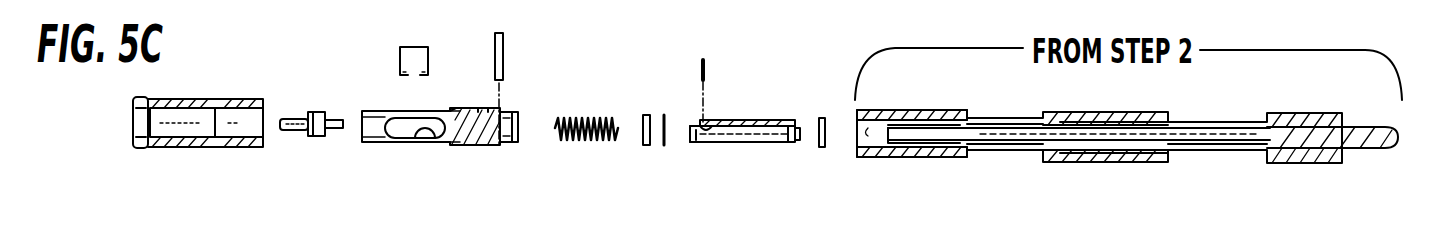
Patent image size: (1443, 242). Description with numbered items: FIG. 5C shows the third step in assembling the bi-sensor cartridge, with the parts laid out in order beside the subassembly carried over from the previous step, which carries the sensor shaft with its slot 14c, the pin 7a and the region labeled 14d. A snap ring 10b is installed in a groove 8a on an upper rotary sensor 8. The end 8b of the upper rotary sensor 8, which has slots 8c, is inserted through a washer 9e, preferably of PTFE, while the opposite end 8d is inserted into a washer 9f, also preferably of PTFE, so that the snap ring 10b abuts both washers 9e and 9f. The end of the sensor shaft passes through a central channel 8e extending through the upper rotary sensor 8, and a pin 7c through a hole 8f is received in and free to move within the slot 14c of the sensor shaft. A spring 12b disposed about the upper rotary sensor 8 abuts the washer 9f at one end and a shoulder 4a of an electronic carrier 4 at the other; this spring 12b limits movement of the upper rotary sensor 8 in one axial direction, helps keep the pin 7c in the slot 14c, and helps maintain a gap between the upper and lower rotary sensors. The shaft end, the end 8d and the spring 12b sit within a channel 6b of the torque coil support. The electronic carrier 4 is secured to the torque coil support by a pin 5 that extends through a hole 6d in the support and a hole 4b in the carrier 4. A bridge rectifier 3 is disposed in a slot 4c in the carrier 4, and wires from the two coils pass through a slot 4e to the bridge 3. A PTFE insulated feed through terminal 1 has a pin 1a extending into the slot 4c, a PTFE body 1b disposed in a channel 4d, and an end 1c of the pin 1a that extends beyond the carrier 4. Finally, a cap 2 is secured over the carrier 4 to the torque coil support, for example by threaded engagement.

The PTFE insulated feed through terminal 1 is at (318, 117).
The pin 1a is at (338, 94).
The PTFE body 1b is at (313, 137).
The end of the pin 1c is at (292, 133).
The cap 2 is at (177, 100).
The bridge rectifier 3 is at (428, 47).
The electronic carrier 4 is at (388, 110).
The shoulder 4a is at (514, 145).
The hole 4b is at (505, 145).
The slot 4c is at (423, 140).
The channel 4d is at (362, 132).
The slot 4e is at (455, 109).
The pin 5 is at (504, 45).
The spring 12b is at (566, 118).
The washer 9f is at (643, 120).
The snap ring 10b is at (664, 115).
The pin 7c is at (706, 64).
The upper rotary sensor 8 is at (750, 120).
The groove 8a is at (756, 144).
The end of the upper rotary sensor 8b is at (798, 122).
The slots 8c is at (800, 145).
The end of the upper rotary sensor 8d is at (694, 140).
The central channel 8e is at (724, 143).
The hole 8f is at (712, 122).
The washer 9e is at (822, 118).
The channel 6b is at (880, 146).
The hole 6d is at (878, 128).
The slot 14c is at (925, 139).
The inner shaft upper 14d is at (950, 128).
The pin 7a is at (1188, 135).